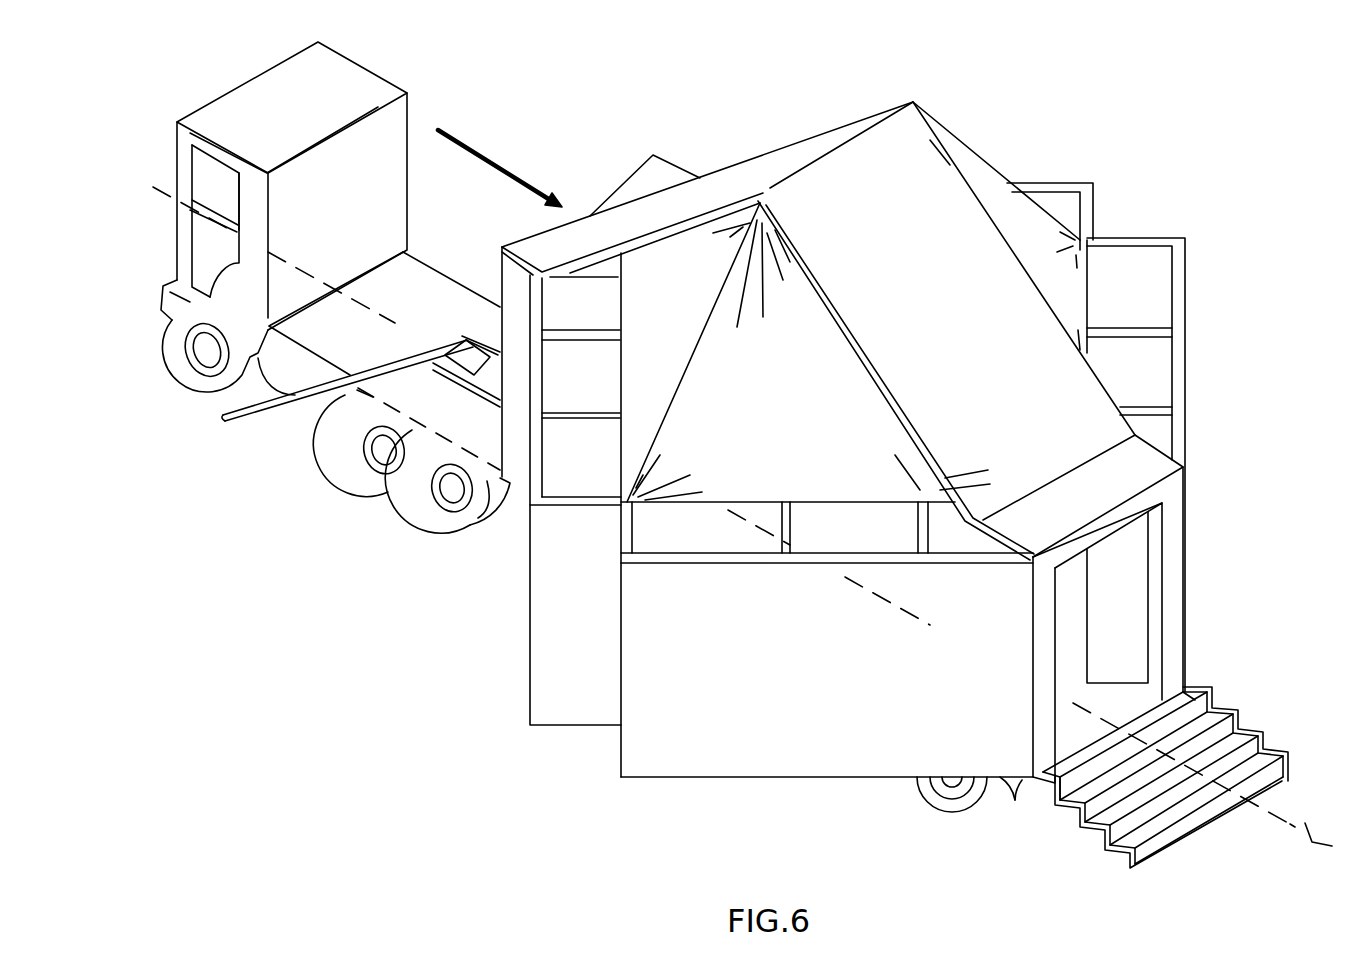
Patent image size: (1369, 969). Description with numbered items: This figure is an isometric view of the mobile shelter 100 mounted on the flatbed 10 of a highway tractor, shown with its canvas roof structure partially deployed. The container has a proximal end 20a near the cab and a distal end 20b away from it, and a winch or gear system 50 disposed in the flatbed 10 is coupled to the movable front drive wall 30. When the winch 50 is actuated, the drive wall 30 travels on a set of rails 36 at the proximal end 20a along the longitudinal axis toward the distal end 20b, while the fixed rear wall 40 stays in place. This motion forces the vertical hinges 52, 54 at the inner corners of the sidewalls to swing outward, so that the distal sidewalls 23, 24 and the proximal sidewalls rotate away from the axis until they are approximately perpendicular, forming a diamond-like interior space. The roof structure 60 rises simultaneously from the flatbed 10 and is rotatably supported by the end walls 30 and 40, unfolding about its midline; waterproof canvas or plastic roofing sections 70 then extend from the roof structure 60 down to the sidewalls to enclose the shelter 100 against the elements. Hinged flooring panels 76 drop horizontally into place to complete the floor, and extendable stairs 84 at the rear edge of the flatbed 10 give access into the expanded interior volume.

The mobile shelter 100 is at (1113, 172).
The flatbed 10 is at (480, 423).
The rails 36 is at (427, 367).
The winch or gear system 50 is at (447, 373).
The front drive wall 30 is at (611, 200).
The proximal end 20a is at (586, 192).
The distal end 20b is at (1198, 658).
The vertical hinge 52 is at (622, 508).
The flexible roofing sections 70 is at (758, 428).
The roof structure 60 is at (898, 163).
The vertical hinge 54 is at (1087, 240).
The distal sidewall 24 is at (1185, 385).
The distal sidewall 23 is at (848, 683).
The fixed rear wall 40 is at (1173, 573).
The hinged flooring panels 76 is at (1077, 723).
The extendable stairs 84 is at (1192, 828).